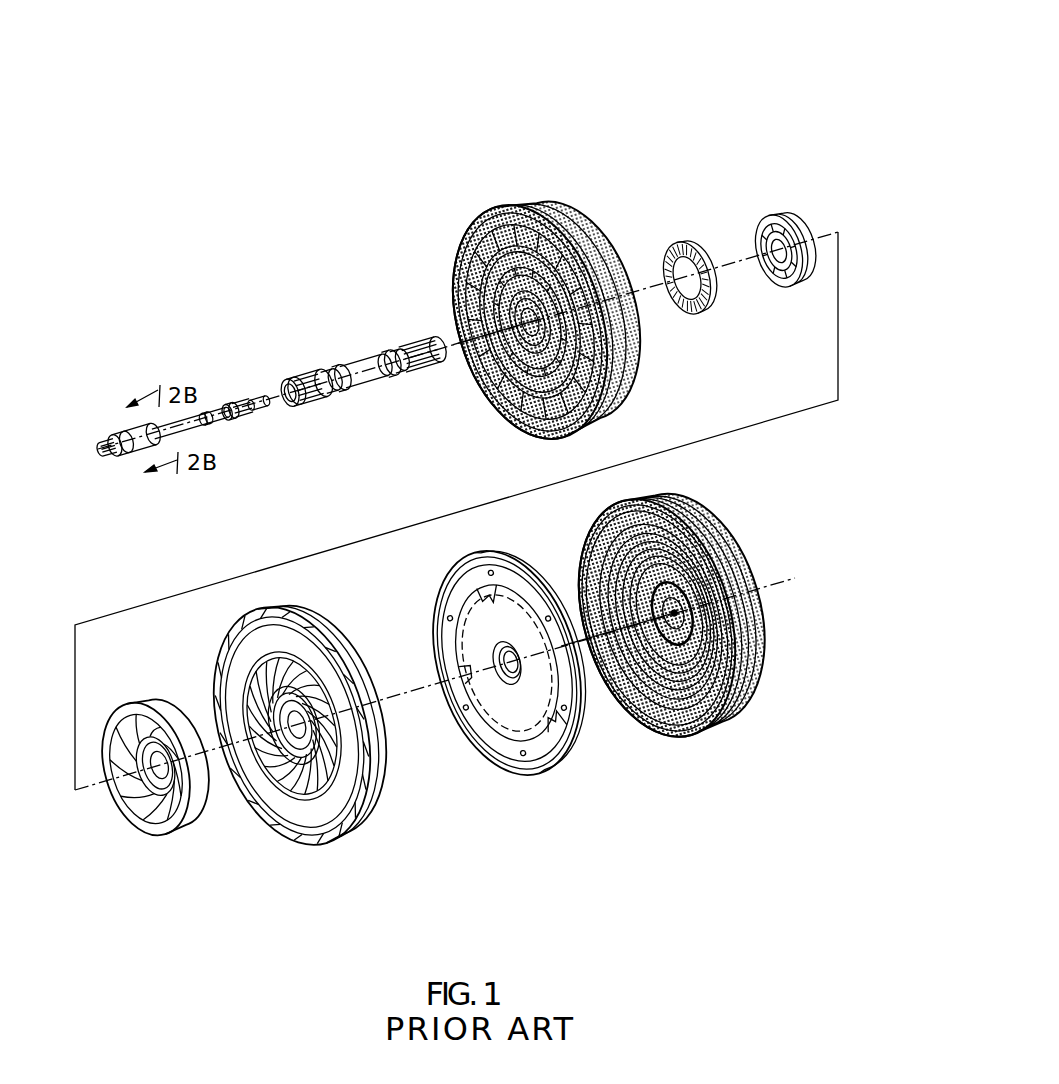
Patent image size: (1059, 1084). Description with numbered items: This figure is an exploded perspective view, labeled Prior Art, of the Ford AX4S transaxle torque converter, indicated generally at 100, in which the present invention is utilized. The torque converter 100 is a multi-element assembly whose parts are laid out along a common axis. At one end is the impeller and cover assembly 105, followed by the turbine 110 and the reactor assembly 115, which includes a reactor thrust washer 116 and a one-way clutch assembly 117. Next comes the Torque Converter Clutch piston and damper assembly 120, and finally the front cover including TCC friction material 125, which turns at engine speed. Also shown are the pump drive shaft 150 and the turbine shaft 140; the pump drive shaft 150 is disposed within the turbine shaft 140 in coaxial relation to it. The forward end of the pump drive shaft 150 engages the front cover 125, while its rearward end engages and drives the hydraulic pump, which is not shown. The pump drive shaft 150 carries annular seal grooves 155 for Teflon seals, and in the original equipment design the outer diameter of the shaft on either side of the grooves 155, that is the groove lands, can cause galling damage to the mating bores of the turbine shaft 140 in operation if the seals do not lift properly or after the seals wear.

The torque converter 100 is at (421, 88).
The impeller and cover assembly 105 is at (482, 347).
The turbine 110 is at (346, 724).
The reactor assembly 115 is at (155, 732).
The reactor thrust washer 116 is at (686, 283).
The one-way clutch assembly 117 is at (789, 265).
The Torque Converter Clutch (TCC) piston and damper assembly 120 is at (564, 704).
The front cover including TCC friction material 125 is at (705, 664).
The turbine shaft 140 is at (363, 317).
The pump drive shaft 150 is at (183, 360).
The grooves 155 is at (237, 402).